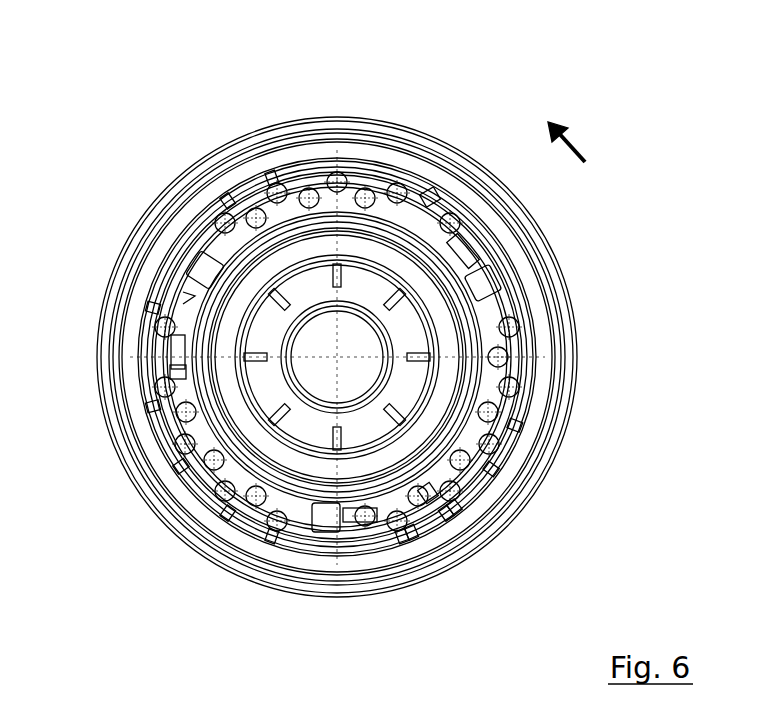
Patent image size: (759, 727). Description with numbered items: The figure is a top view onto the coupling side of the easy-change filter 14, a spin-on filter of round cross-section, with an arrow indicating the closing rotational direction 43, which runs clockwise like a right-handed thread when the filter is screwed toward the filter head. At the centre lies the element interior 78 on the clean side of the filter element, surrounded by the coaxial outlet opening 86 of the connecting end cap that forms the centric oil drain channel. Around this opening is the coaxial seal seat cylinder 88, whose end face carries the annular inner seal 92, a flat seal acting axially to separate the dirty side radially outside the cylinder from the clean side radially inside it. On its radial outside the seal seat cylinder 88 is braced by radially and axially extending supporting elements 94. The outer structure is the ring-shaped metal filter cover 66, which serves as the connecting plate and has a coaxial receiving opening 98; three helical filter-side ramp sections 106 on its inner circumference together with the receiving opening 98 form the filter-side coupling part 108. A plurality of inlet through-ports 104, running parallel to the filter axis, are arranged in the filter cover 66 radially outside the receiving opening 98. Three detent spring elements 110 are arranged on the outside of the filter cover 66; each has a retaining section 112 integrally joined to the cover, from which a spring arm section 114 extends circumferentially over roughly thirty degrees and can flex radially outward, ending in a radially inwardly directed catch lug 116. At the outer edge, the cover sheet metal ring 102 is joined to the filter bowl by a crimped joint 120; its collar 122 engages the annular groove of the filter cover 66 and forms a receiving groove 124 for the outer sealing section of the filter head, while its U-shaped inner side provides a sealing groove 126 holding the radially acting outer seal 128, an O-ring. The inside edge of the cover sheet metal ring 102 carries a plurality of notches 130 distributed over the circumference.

The easy-change filter 14 is at (160, 62).
The closing rotational direction 43 is at (588, 160).
The filter cover 66 is at (252, 510).
The element interior 78 is at (342, 389).
The outlet opening 86 is at (270, 257).
The seal seat cylinder 88 is at (268, 383).
The inner seal 92 is at (283, 393).
The supporting elements 94 is at (327, 323).
The receiving opening 98 is at (247, 255).
The cover sheet metal ring 102 is at (523, 474).
The inlet through-ports 104 is at (280, 520).
The filter-side ramp sections 106 is at (230, 255).
The filter-side coupling part 108 is at (376, 222).
The detent spring elements 110 is at (455, 232).
The retaining section 112 is at (205, 262).
The spring arm section 114 is at (180, 323).
The catch lug 116 is at (400, 195).
The crimped joint 120 is at (570, 380).
The collar 122 is at (262, 162).
The receiving groove 124 is at (328, 147).
The sealing groove 126 is at (535, 332).
The outer seal 128 is at (235, 505).
The notches 130 is at (213, 200).